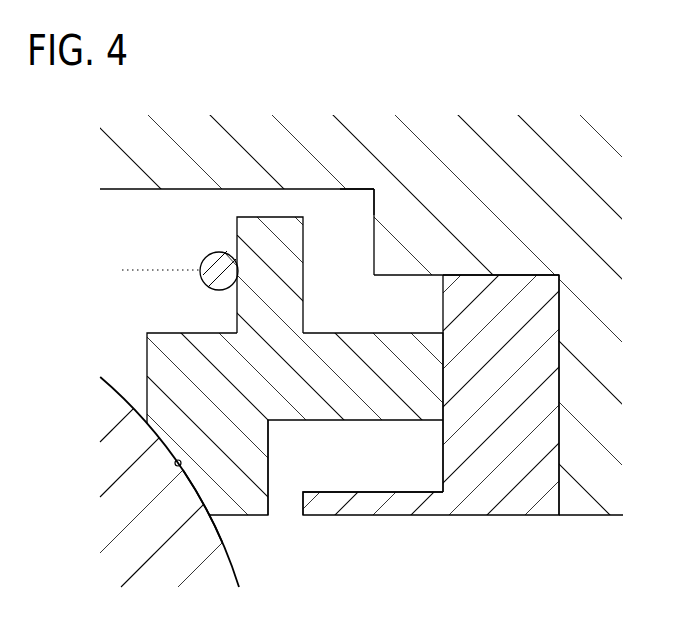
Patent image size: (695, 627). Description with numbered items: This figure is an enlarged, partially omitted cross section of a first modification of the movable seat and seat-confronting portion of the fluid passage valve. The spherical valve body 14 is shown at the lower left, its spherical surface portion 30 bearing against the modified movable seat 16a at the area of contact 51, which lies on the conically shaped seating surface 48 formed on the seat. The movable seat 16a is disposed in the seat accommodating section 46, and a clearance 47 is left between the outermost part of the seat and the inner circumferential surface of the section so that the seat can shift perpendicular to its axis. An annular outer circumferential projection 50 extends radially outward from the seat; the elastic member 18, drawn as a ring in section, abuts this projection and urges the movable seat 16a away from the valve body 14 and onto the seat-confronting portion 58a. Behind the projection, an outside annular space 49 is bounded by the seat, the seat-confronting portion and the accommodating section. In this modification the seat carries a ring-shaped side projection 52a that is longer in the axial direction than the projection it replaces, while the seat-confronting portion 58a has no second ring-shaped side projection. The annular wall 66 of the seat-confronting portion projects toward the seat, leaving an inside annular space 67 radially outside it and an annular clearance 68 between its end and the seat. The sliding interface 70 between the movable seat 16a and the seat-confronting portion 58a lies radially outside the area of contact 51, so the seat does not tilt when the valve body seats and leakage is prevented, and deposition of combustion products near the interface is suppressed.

The valve body 14 is at (102, 452).
The movable seat 16a is at (145, 351).
The elastic member 18 is at (123, 270).
The spherical surface portion 30 is at (213, 519).
The seat accommodating section 46 is at (337, 201).
The clearance 47 is at (255, 203).
The seating surface 48 is at (195, 495).
The outside annular space 49 is at (376, 240).
The annular outer circumferential projection 50 is at (282, 230).
The area of contact 51 is at (175, 465).
The ring-shaped side projection 52a is at (355, 347).
The seat-confronting portion 58a is at (560, 378).
The annular wall 66 is at (368, 490).
The inside annular space 67 is at (425, 462).
The annular clearance 68 is at (290, 496).
The sliding interface 70 is at (444, 357).